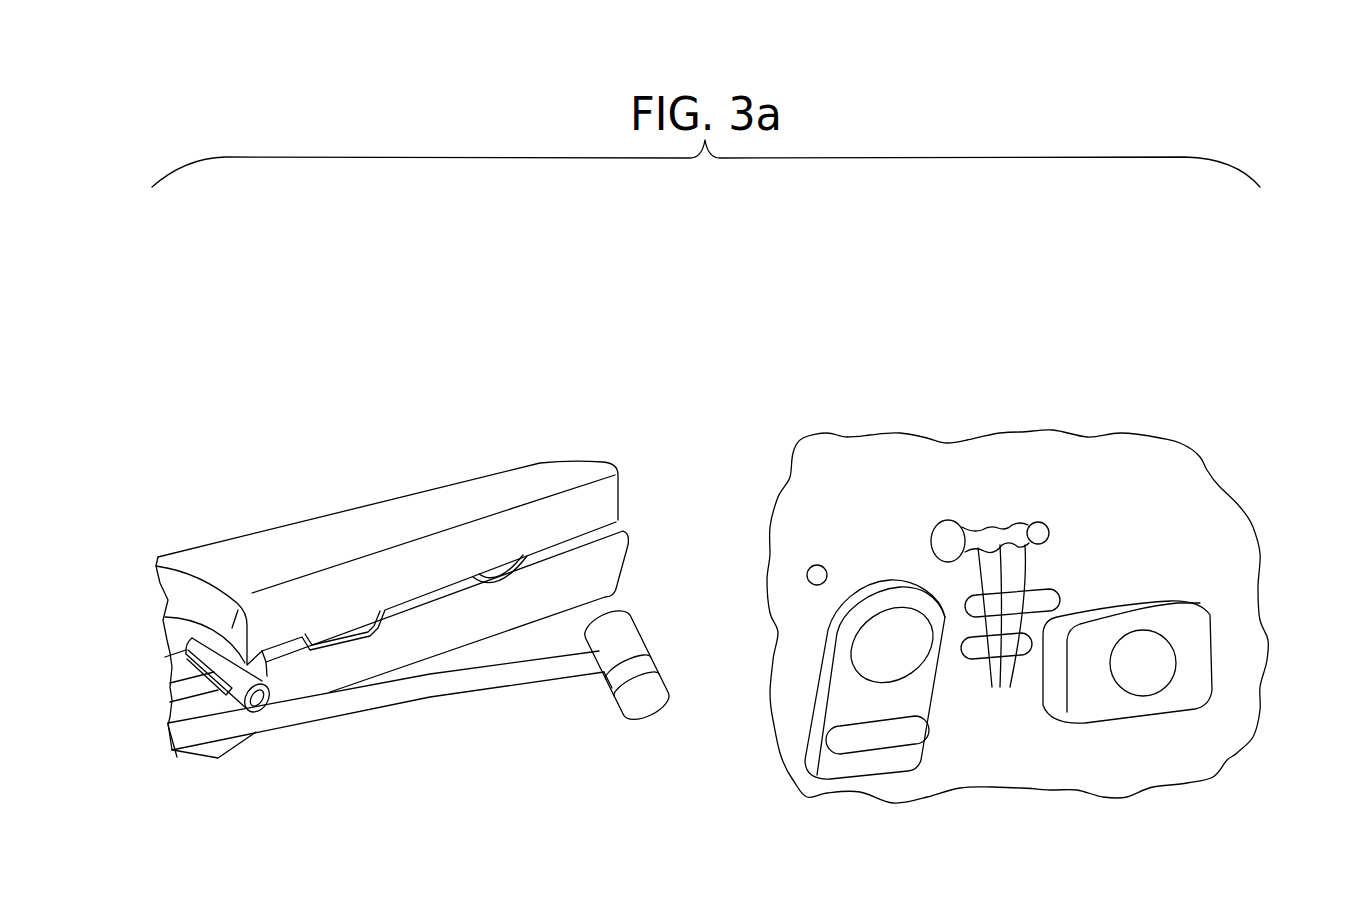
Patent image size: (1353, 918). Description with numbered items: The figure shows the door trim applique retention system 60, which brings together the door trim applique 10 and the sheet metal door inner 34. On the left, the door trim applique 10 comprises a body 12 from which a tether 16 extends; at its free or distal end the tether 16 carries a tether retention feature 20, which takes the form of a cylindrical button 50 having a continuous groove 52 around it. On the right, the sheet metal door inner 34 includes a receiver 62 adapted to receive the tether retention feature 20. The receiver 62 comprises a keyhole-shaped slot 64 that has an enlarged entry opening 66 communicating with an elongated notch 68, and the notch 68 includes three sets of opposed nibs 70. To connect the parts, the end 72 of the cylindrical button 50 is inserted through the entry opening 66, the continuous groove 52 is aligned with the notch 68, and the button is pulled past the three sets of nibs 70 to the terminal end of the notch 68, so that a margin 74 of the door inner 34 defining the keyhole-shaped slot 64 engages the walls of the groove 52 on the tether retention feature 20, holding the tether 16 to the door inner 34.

The door trim applique 10 is at (187, 503).
The body 12 is at (352, 510).
The tether 16 is at (373, 705).
The tether retention feature 20 is at (620, 611).
The sheet metal door inner 34 is at (1187, 517).
The cylindrical button 50 is at (634, 642).
The continuous groove 52 is at (603, 688).
The door trim applique retention system 60 is at (1025, 452).
The receiver 62 is at (1017, 502).
The keyhole-shaped slot 64 is at (980, 527).
The enlarged entry opening 66 is at (933, 528).
The notch 68 is at (1046, 522).
The opposed nibs 70 is at (1010, 631).
The end 72 is at (650, 706).
The margin 74 is at (1052, 540).